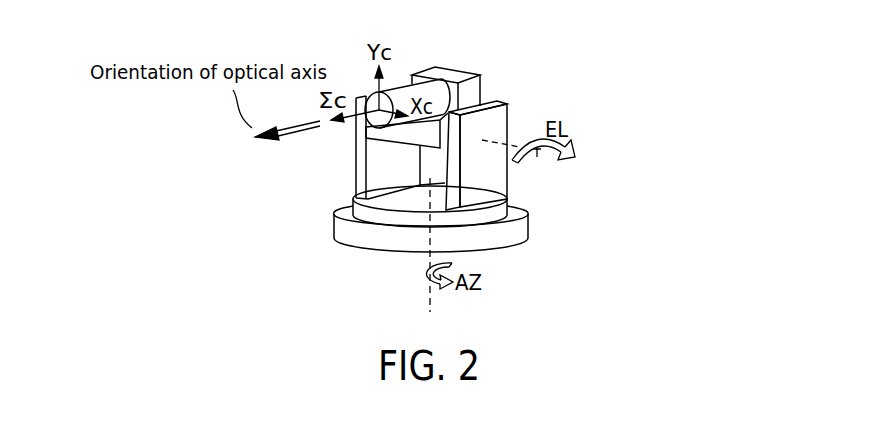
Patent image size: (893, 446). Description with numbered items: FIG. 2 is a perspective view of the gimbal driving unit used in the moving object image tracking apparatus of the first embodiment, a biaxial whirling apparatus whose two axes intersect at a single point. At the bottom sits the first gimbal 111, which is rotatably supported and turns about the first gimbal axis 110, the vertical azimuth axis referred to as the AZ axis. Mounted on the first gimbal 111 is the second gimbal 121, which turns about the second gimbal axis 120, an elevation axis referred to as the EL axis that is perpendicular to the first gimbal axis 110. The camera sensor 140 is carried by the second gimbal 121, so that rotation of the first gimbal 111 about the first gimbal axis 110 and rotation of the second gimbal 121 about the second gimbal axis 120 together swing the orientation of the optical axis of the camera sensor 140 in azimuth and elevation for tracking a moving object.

The first gimbal axis 110 is at (430, 296).
The first gimbal 111 is at (508, 238).
The second gimbal axis 120 is at (538, 157).
The second gimbal 121 is at (405, 138).
The camera sensor 140 is at (385, 92).